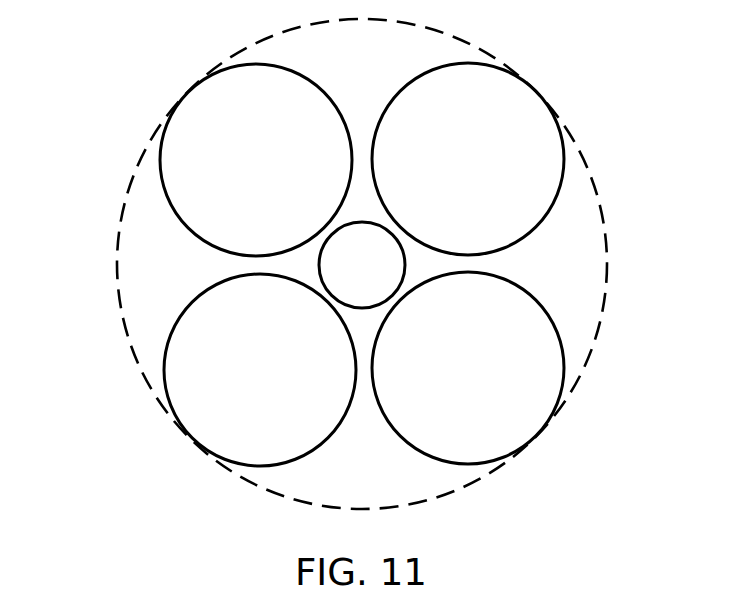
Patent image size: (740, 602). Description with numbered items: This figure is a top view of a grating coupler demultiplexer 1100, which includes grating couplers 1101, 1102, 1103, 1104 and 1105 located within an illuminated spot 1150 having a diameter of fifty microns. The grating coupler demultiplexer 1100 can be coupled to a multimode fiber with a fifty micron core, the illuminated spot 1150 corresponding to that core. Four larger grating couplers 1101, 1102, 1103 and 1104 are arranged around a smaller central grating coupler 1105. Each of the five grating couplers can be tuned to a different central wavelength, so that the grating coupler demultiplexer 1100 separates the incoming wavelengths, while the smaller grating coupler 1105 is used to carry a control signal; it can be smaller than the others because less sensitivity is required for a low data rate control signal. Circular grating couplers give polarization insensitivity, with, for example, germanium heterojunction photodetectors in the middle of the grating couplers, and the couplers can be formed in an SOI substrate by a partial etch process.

The grating coupler demultiplexer 1100 is at (130, 453).
The grating coupler 1101 is at (227, 380).
The grating coupler 1102 is at (223, 172).
The grating coupler 1103 is at (436, 172).
The grating coupler 1104 is at (439, 378).
The grating coupler 1105 is at (393, 272).
The illuminated spot 1150 is at (150, 380).